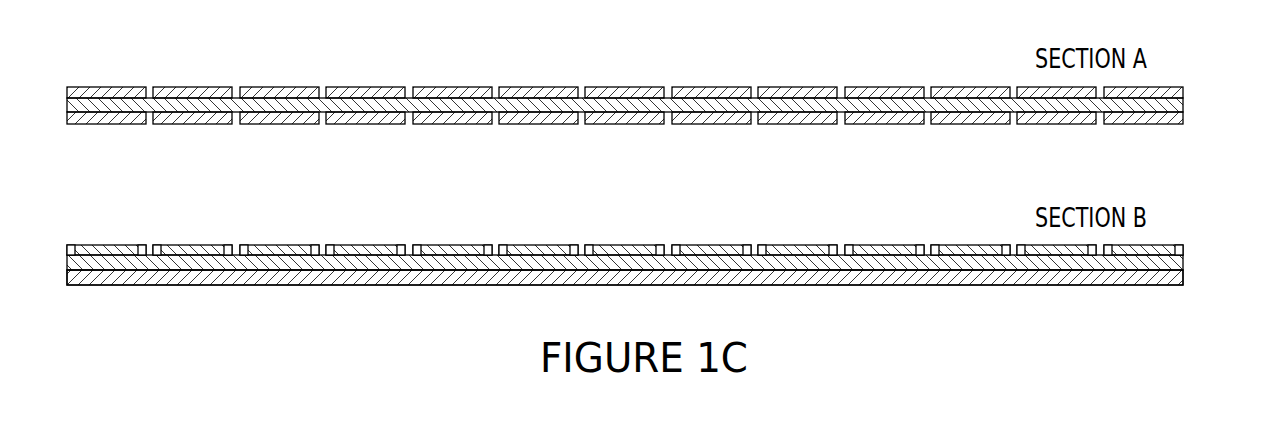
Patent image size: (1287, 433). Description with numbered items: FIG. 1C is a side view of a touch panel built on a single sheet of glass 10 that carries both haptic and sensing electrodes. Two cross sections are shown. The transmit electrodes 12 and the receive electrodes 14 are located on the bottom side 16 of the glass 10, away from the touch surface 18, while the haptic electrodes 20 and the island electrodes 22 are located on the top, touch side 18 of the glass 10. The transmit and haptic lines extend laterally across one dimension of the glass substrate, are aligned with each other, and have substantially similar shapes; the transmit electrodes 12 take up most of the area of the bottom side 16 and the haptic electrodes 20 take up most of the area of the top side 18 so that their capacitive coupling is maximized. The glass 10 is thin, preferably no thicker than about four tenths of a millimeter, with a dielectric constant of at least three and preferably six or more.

The sheet of glass 10 is at (1212, 75).
The transmit (Tx) electrodes 12 is at (103, 124).
The receive (Rx) electrodes 14 is at (138, 285).
The bottom side 16 is at (1143, 124).
The touch surface 18 is at (963, 87).
The haptic (Hx) electrodes 20 is at (110, 87).
The island (Is) electrodes 22 is at (108, 245).